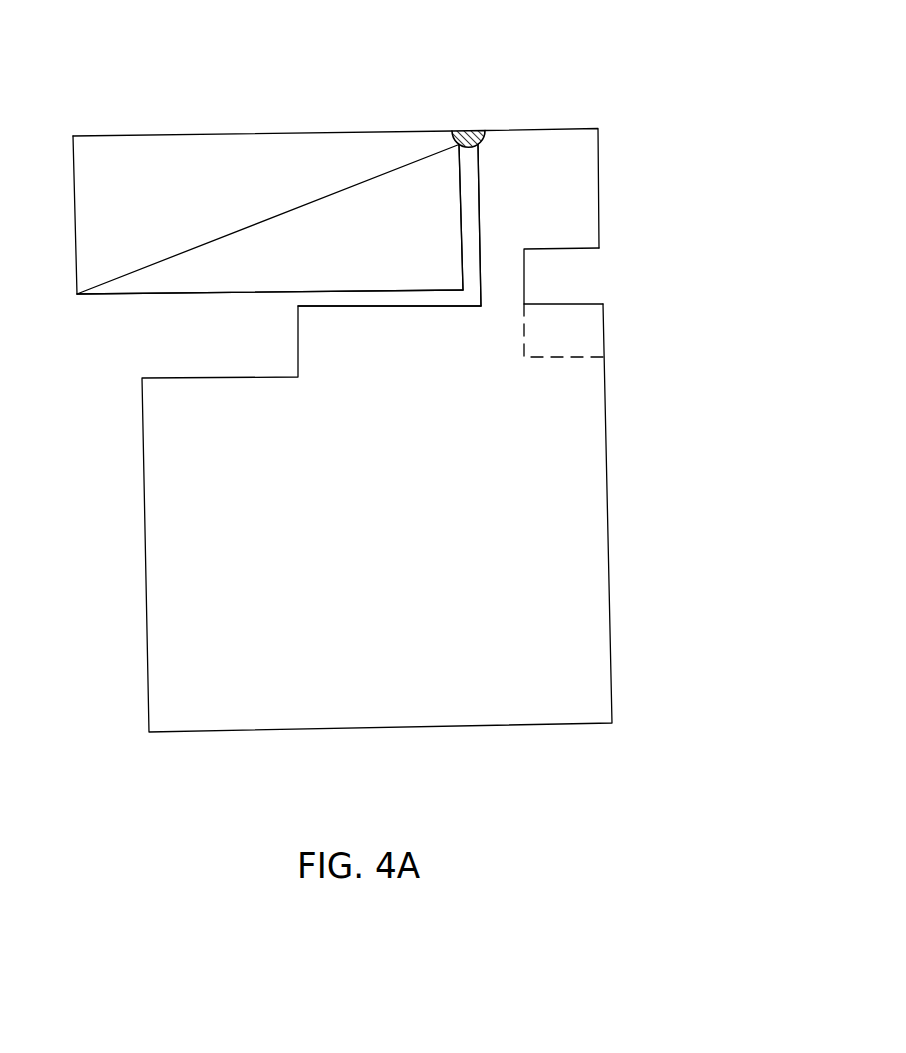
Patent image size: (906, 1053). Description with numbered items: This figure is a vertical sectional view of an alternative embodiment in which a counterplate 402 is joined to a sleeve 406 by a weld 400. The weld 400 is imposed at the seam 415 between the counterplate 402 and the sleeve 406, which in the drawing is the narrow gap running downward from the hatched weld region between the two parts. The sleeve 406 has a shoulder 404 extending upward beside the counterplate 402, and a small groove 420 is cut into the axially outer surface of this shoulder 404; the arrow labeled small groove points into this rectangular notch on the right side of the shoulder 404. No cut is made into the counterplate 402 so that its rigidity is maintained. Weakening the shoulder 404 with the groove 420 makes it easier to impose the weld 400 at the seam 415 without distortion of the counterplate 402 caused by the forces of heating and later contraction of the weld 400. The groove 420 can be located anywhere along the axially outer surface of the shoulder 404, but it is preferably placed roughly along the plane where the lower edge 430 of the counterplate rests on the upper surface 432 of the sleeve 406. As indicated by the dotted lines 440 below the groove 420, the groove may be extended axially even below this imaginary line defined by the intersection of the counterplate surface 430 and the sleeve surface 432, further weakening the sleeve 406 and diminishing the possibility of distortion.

The weld 400 is at (467, 133).
The counterplate 402 is at (188, 135).
The shoulder 404 is at (582, 180).
The sleeve 406 is at (593, 553).
The seam 415 is at (468, 211).
The small groove 420 is at (575, 277).
The lower edge of the counterplate 430 is at (382, 290).
The upper surface of the sleeve 432 is at (438, 306).
The dotted lines 440 is at (557, 357).